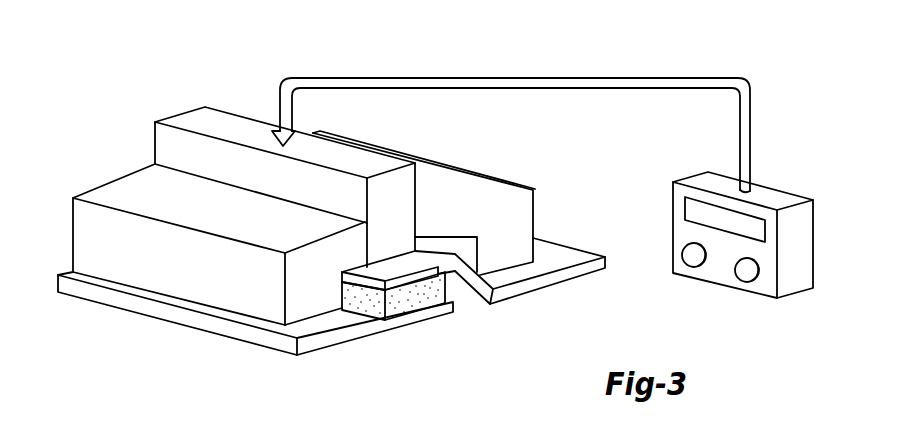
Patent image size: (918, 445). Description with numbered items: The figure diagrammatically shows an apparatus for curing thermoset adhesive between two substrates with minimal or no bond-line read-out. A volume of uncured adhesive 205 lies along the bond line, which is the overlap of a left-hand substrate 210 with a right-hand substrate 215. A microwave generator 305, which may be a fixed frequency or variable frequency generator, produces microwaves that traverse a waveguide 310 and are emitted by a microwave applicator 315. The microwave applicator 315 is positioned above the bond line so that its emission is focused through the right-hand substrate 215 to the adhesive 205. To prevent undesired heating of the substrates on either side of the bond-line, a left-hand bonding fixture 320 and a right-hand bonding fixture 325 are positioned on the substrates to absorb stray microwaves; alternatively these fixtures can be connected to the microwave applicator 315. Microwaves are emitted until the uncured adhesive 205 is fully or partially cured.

The uncured adhesive 205 is at (413, 298).
The left-hand substrate 210 is at (315, 330).
The right-hand substrate 215 is at (553, 260).
The microwave generator 305 is at (788, 283).
The waveguide 310 is at (548, 78).
The microwave applicator 315 is at (197, 115).
The left-hand bonding fixture 320 is at (140, 190).
The right-hand bonding fixture 325 is at (467, 180).